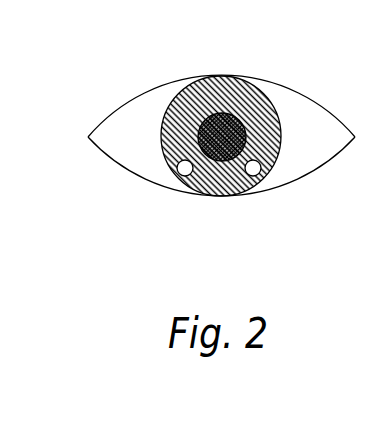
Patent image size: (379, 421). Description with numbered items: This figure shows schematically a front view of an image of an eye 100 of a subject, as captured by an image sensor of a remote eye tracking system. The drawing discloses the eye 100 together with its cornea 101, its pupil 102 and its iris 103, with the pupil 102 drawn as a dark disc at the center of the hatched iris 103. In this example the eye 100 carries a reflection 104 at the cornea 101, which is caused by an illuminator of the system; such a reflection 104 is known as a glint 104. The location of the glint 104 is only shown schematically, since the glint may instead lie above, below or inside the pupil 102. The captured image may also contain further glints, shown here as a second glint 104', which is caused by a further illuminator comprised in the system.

The eye 100 is at (107, 188).
The cornea 101 is at (180, 102).
The pupil 102 is at (213, 115).
The iris 103 is at (262, 130).
The glint 104 is at (238, 201).
The second glint 104' is at (310, 191).